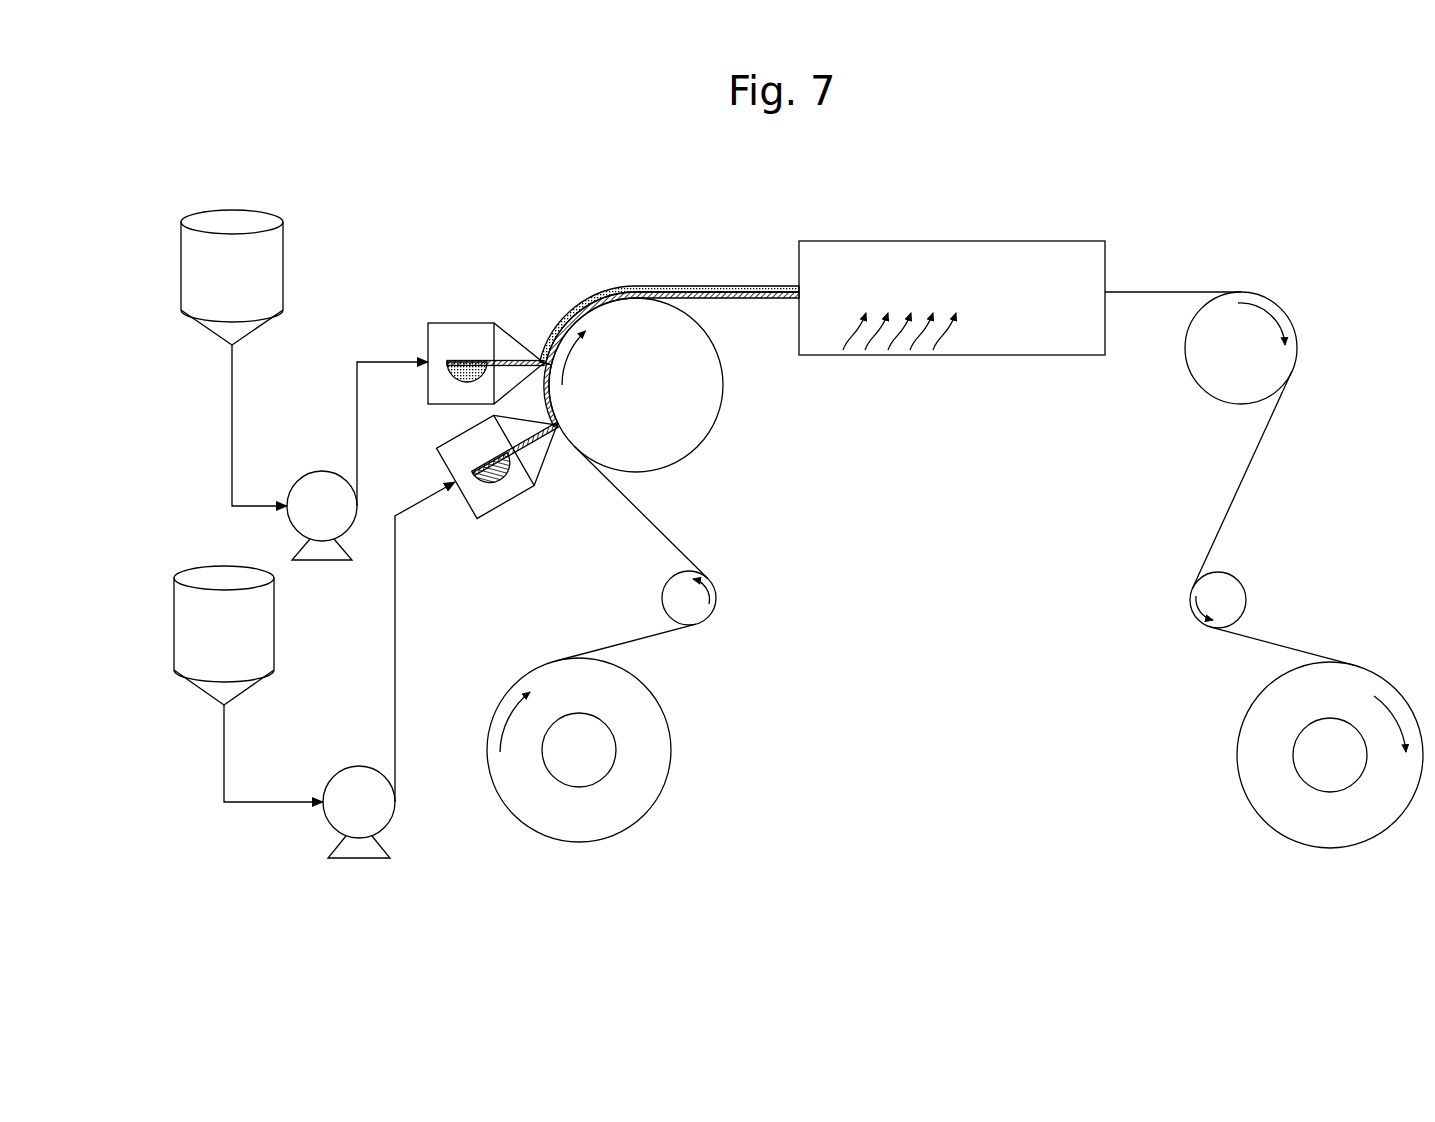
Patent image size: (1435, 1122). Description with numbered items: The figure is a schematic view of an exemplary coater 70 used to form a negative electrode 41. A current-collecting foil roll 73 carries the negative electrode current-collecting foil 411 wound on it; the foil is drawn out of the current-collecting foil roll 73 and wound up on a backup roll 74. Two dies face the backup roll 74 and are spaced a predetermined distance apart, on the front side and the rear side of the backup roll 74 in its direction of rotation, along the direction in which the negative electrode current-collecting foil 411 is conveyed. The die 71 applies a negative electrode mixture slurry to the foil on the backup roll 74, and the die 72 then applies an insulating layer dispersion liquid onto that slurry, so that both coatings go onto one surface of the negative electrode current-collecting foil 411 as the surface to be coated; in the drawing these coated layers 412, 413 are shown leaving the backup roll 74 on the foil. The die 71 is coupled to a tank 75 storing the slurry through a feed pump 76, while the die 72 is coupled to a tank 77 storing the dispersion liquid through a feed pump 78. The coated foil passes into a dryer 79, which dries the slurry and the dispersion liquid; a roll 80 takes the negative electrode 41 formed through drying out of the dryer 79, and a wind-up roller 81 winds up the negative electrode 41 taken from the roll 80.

The coater 70 is at (520, 238).
The die 71 is at (503, 502).
The die 72 is at (458, 322).
The current-collecting foil roll 73 is at (530, 670).
The backup roll 74 is at (693, 450).
The tank 75 is at (174, 622).
The feed pump 76 is at (360, 860).
The tank 77 is at (181, 256).
The feed pump 78 is at (323, 562).
The dryer 79 is at (865, 240).
The roll 80 is at (1282, 298).
The wind-up roller 81 is at (1238, 757).
The negative electrode 41 is at (1229, 505).
The negative electrode current-collecting foil 411 is at (643, 517).
The first coating layer 412 is at (686, 284).
The second coating layer 413 is at (760, 284).